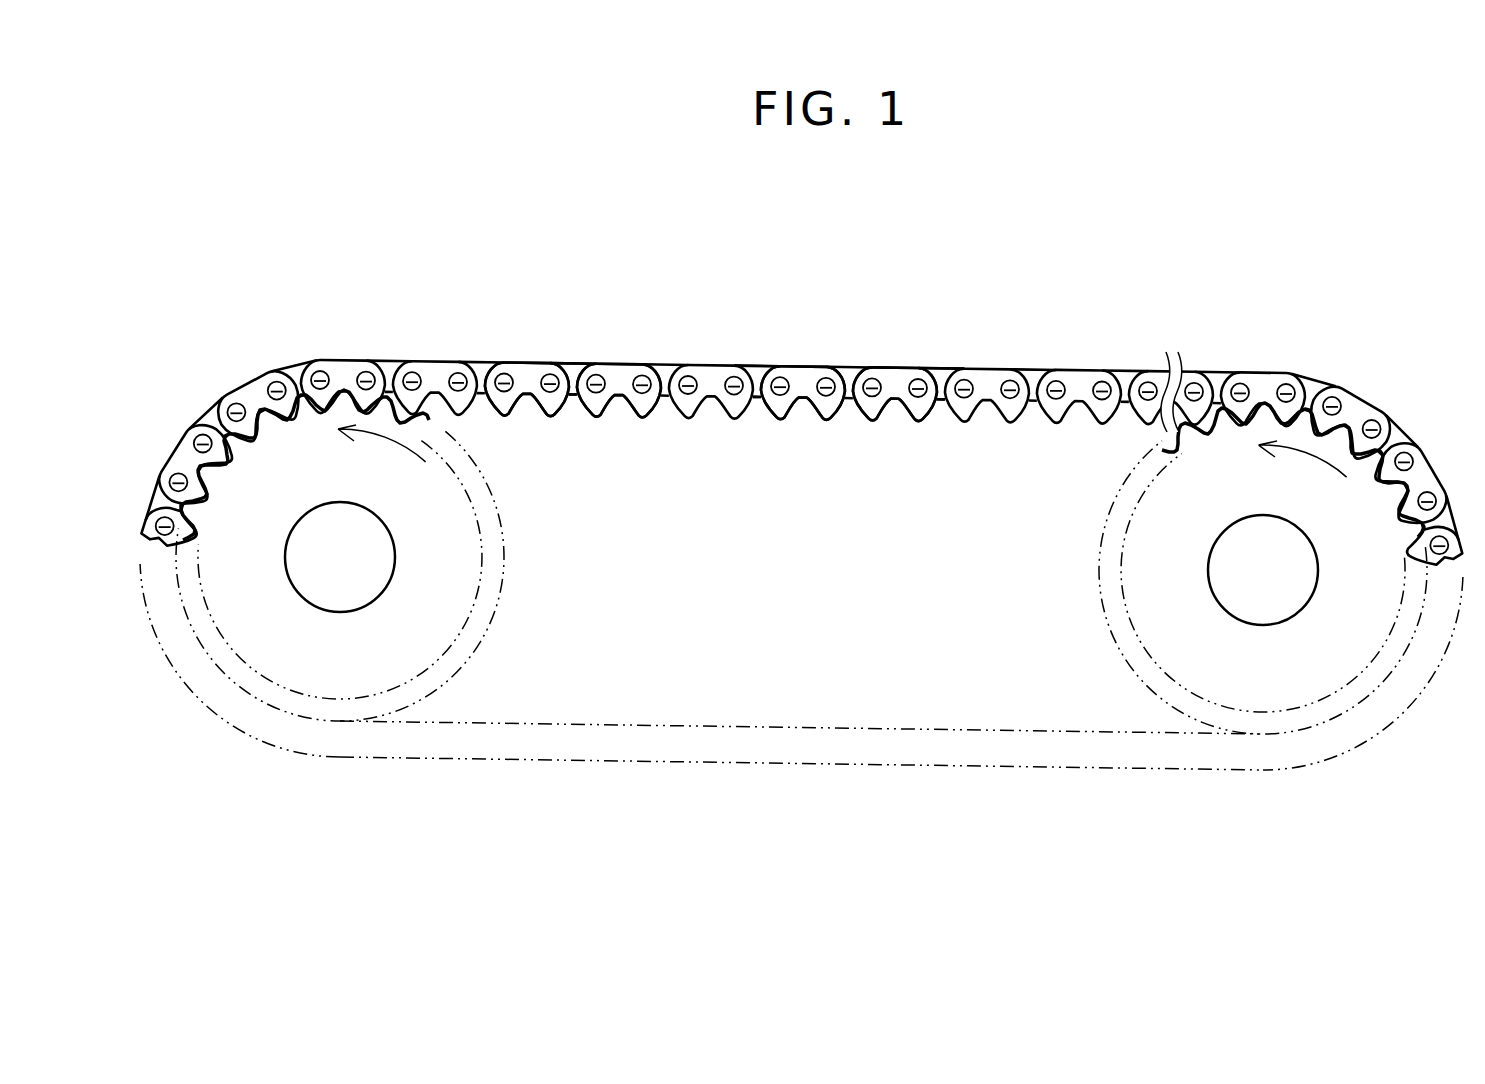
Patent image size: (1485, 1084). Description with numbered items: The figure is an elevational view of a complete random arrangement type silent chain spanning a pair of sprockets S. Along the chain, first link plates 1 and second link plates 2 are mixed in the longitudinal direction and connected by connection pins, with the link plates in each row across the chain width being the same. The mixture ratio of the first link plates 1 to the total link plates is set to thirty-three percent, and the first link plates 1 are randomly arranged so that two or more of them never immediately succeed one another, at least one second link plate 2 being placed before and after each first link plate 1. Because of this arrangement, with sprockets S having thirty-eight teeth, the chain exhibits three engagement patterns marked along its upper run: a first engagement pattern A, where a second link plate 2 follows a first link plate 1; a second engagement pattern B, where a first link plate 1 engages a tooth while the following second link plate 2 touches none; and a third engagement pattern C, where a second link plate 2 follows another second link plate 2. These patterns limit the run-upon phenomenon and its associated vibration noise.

The first link plate 1 is at (801, 369).
The second link plate 2 is at (938, 369).
The sprocket S is at (352, 489).
The first engagement pattern A is at (590, 298).
The second engagement pattern B is at (818, 300).
The third engagement pattern C is at (957, 300).